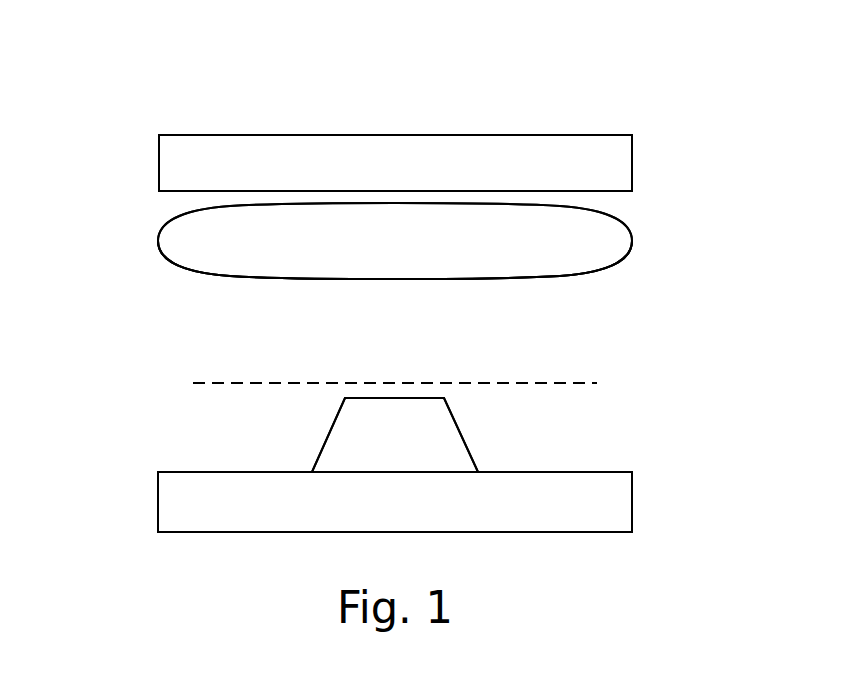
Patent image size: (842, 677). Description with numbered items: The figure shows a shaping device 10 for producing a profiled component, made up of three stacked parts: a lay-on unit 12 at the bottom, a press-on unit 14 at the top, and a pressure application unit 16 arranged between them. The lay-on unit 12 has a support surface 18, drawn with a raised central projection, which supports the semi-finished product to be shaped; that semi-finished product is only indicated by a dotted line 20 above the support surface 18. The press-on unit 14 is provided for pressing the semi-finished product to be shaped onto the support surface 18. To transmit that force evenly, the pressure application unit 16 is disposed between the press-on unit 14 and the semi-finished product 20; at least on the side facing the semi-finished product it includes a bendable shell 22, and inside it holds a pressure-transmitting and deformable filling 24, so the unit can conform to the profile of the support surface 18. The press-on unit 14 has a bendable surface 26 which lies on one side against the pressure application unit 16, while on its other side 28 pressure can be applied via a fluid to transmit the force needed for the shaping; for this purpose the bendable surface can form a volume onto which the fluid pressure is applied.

The shaping device 10 is at (505, 95).
The lay-on unit 12 is at (645, 487).
The press-on unit 14 is at (640, 128).
The pressure application unit 16 is at (642, 234).
The support surface 18 is at (165, 472).
The semi-finished product 20 is at (582, 382).
The bendable shell 22 is at (203, 268).
The pressure-transmitting and deformable filling 24 is at (412, 262).
The bendable surface 26 is at (157, 133).
The other side 28 is at (172, 192).